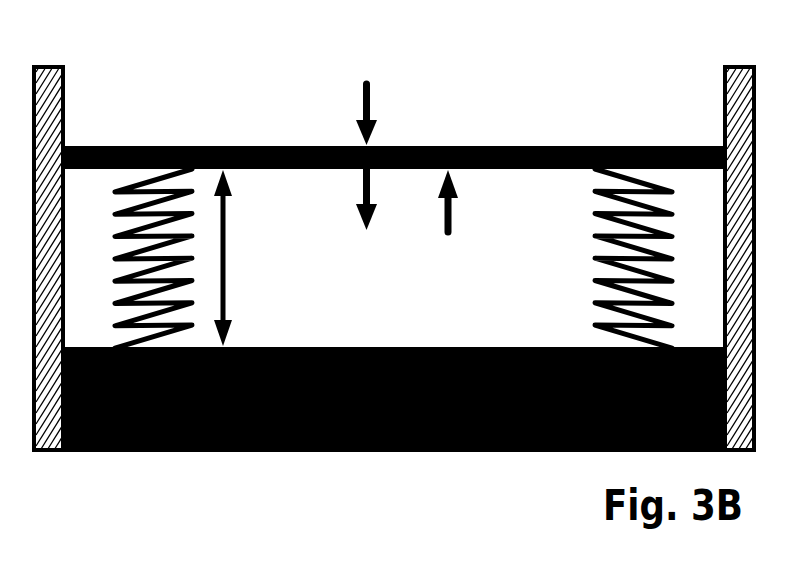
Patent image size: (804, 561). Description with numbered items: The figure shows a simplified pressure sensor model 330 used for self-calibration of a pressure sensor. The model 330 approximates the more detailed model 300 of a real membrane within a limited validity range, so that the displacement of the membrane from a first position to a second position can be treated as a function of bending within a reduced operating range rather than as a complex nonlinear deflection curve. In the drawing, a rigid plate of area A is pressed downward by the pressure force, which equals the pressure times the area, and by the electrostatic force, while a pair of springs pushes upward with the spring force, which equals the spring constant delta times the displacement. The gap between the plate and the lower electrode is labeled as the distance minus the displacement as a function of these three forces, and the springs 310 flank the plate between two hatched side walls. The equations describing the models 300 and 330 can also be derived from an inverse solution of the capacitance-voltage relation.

The simplified pressure sensor model 330 is at (343, 16).
The pressure sensor model 300 is at (653, 0).
The springs (spring constant delta) 310 is at (393, 258).